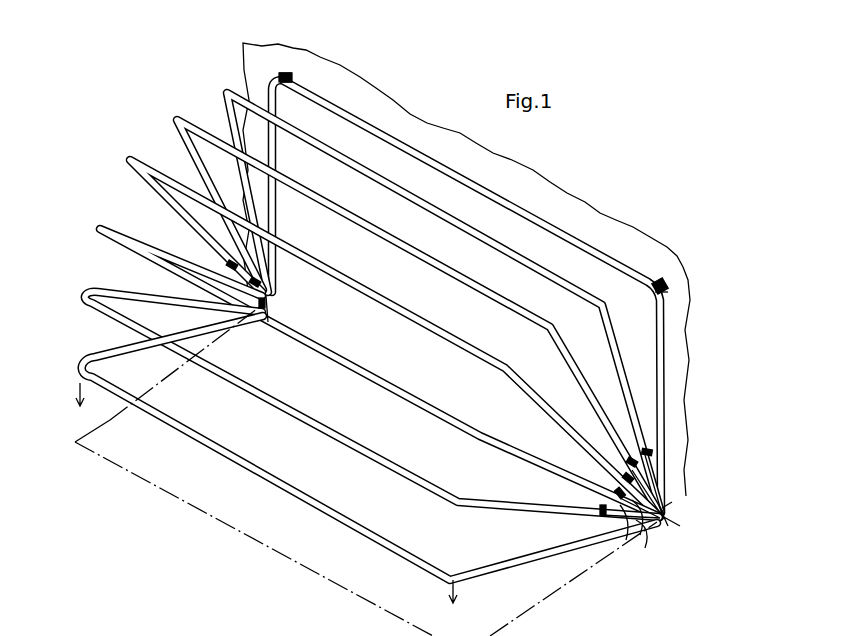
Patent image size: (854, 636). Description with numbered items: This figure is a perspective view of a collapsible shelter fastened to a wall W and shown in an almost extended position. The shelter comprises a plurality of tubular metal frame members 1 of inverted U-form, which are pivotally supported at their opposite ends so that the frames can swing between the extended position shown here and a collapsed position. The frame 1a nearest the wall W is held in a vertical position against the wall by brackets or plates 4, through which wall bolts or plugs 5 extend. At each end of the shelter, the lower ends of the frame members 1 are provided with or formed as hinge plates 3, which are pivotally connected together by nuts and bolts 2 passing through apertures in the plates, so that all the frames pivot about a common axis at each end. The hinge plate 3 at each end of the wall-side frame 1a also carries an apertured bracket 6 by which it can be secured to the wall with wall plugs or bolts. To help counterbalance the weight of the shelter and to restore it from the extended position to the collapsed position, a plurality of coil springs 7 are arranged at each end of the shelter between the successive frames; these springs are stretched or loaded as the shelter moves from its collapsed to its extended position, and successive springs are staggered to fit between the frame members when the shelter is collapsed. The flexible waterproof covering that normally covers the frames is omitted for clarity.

The tubular metal frame members 1 is at (371, 330).
The frame nearest the wall 1a is at (374, 98).
The nuts and bolts 2 is at (669, 513).
The hinge plates 3 is at (668, 523).
The brackets or plates 4 is at (293, 80).
The wall bolts or plugs 5 is at (287, 74).
The apertured bracket 6 is at (673, 503).
The coil springs 7 is at (235, 262).
The wall W is at (353, 86).